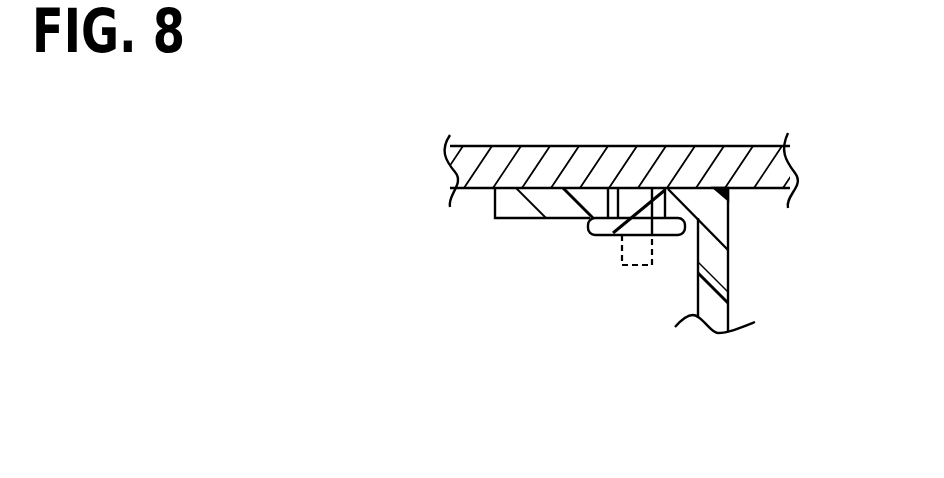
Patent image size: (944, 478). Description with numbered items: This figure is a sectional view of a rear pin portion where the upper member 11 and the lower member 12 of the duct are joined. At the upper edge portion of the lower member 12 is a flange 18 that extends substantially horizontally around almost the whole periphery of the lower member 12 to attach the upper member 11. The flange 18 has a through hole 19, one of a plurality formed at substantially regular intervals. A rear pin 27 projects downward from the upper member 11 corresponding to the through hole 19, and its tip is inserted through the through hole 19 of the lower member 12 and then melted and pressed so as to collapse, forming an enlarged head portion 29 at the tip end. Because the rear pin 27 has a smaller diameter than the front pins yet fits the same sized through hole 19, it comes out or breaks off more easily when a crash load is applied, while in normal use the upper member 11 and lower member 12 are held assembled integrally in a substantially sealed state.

The upper member 11 is at (553, 146).
The lower member 12 is at (728, 275).
The flange 18 is at (523, 218).
The through hole 19 is at (660, 190).
The rear pin 27 is at (637, 265).
The enlarged head portion 29 is at (607, 235).